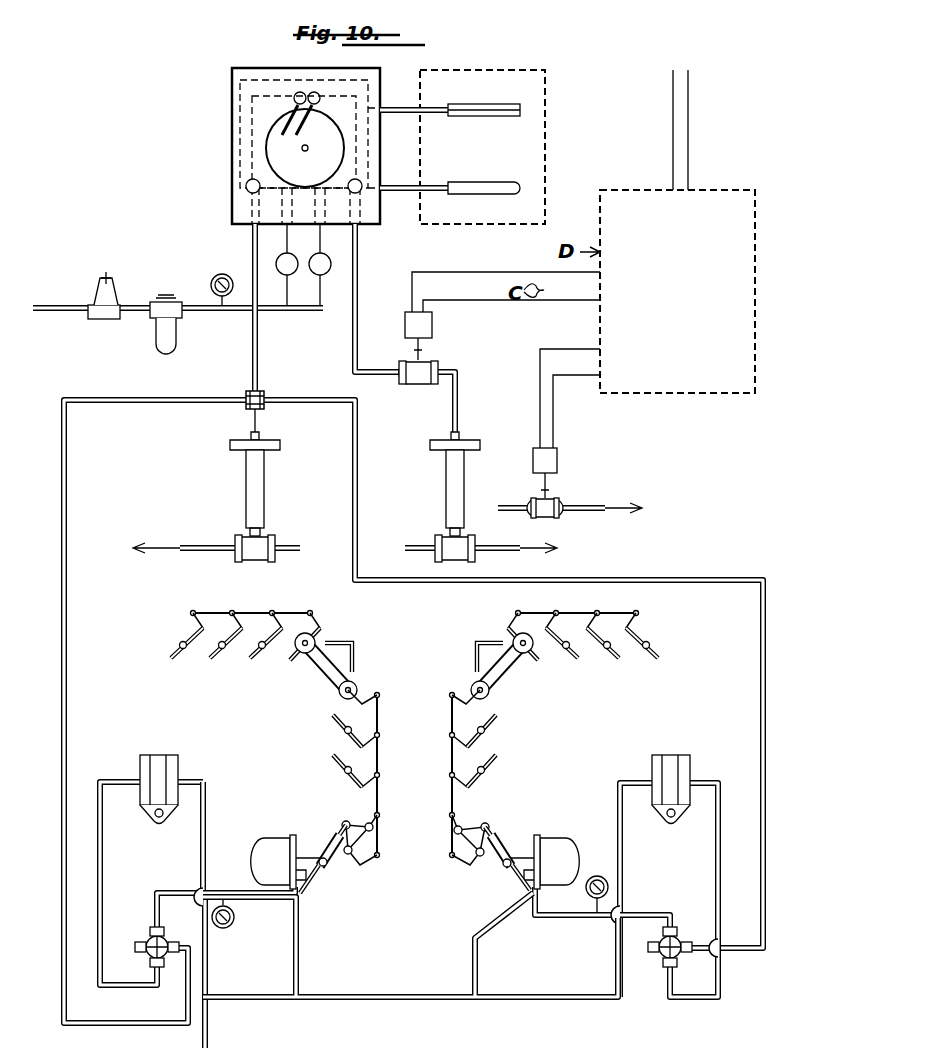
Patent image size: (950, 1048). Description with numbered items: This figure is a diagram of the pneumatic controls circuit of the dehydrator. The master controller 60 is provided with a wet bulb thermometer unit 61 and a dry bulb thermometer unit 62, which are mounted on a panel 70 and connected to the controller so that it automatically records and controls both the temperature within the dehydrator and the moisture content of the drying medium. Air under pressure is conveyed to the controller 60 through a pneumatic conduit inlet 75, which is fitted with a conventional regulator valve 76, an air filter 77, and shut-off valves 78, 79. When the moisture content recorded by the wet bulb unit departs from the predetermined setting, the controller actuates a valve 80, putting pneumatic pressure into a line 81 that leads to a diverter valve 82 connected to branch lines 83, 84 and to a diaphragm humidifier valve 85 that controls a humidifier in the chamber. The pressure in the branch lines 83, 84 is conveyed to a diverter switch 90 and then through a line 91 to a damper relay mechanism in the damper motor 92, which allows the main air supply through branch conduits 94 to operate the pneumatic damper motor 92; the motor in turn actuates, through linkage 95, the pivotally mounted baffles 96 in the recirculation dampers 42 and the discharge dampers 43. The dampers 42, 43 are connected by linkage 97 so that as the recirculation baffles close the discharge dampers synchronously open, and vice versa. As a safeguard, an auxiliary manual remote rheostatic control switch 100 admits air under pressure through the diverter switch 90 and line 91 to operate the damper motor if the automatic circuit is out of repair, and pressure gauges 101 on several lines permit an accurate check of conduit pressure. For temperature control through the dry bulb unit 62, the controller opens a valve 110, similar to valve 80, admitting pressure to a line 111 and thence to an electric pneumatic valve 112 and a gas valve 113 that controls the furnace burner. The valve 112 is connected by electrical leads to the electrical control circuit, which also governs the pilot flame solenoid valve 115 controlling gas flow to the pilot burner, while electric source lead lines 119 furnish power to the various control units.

The recirculation dampers 42 is at (441, 780).
The discharge dampers 43 is at (278, 606).
The master controller 60 is at (236, 150).
The wet bulb thermometer unit 61 is at (495, 104).
The dry bulb thermometer unit 62 is at (498, 190).
The panel 70 is at (546, 136).
The pneumatic conduit inlet 75 is at (200, 310).
The regulator valve 76 is at (112, 278).
The air filter 77 is at (166, 348).
The shut-off valve 78 is at (276, 256).
The shut-off valve 79 is at (331, 264).
The valve 80 is at (246, 188).
The line 81 is at (260, 341).
The diverter valve 82 is at (264, 395).
The branch line 83 is at (160, 408).
The branch line 84 is at (300, 410).
The humidifier valve 85 is at (252, 478).
The diverter switch 90 is at (150, 938).
The line 91 is at (176, 890).
The damper motor 92 is at (276, 838).
The branch conduits 94 is at (298, 946).
The linkage 95 is at (334, 868).
The baffles 96 is at (258, 650).
The linkage 97 is at (322, 676).
The manual remote rheostatic control switch 100 is at (184, 738).
The pressure gauges 101 is at (212, 280).
The valve 110 is at (362, 190).
The line 111 is at (359, 320).
The electric pneumatic valve 112 is at (424, 372).
The gas valve 113 is at (455, 489).
The pilot flame solenoid valve 115 is at (550, 504).
The electric source lead lines 119 is at (690, 108).